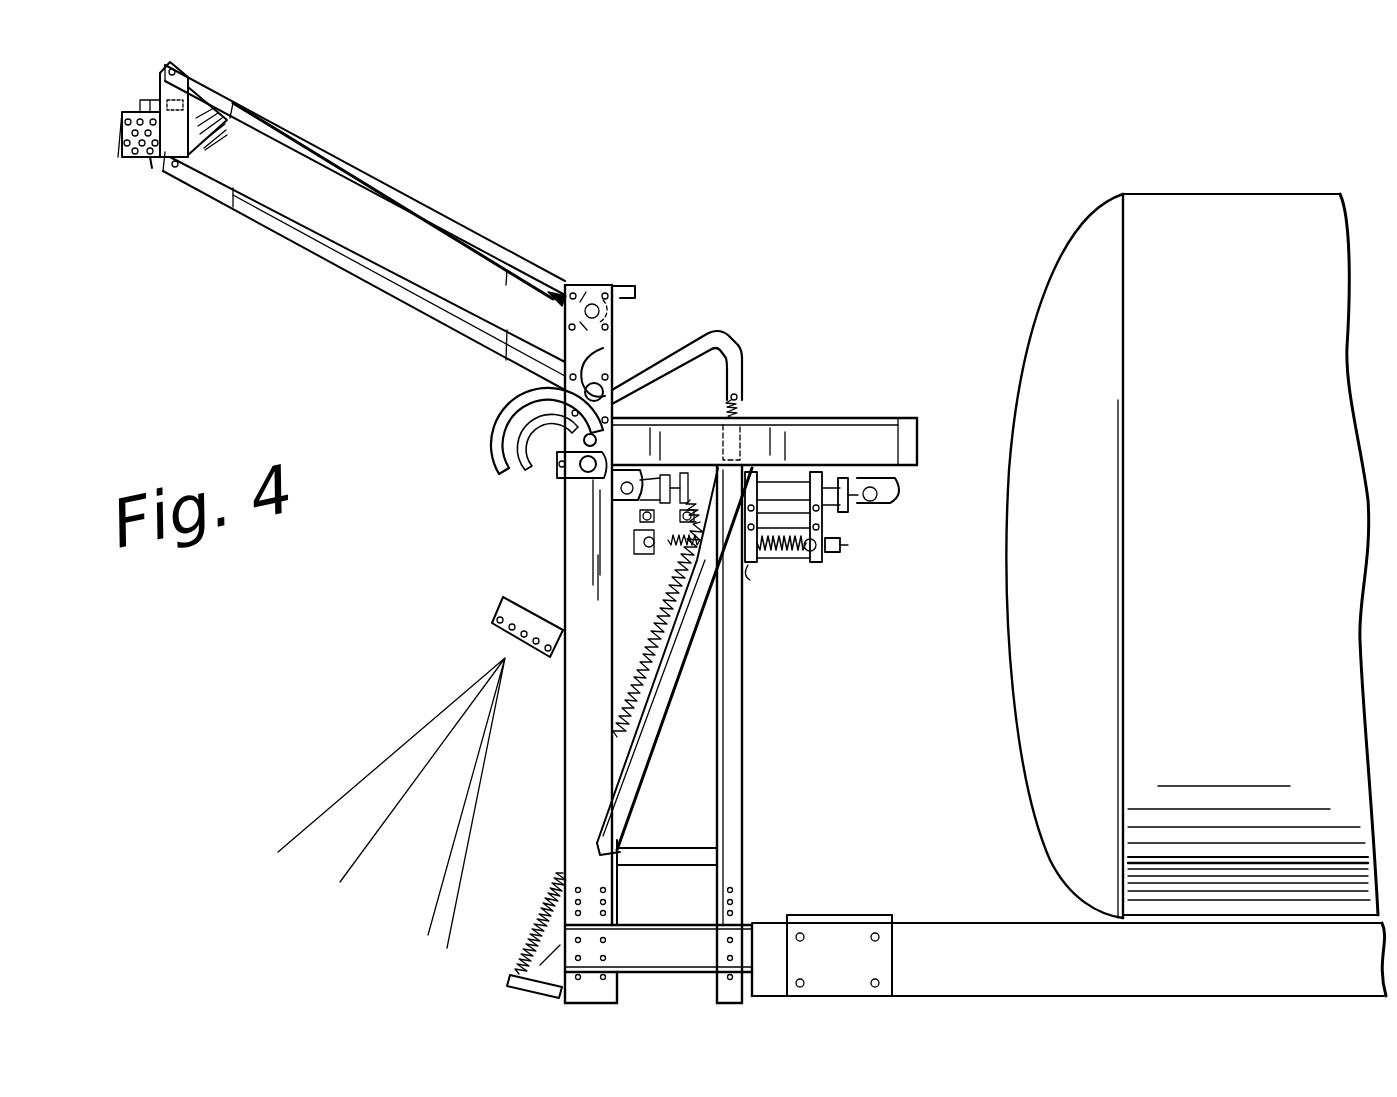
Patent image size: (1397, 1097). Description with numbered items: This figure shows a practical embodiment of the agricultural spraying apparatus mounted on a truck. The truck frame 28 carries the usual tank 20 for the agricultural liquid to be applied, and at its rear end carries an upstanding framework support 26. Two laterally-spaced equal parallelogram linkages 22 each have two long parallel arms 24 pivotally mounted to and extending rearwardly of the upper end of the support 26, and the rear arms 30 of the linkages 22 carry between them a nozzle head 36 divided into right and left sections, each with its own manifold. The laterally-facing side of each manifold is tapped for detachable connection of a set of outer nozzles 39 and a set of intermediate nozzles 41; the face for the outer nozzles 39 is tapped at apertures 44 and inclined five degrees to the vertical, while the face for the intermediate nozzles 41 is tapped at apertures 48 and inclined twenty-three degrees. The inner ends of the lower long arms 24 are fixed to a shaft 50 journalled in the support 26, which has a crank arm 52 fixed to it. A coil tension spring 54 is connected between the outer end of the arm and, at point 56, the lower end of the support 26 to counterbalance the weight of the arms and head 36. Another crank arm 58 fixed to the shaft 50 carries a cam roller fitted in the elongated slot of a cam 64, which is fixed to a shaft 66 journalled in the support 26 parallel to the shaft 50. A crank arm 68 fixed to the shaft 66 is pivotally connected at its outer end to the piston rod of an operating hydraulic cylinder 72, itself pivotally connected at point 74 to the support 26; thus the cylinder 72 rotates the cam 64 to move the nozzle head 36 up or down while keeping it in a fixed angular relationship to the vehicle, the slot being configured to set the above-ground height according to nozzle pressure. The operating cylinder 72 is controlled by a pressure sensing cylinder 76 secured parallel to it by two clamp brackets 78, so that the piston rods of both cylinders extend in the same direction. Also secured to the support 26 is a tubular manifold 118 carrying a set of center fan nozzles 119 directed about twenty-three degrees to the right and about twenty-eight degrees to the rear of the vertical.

The tank 20 is at (1185, 194).
The parallelogram linkage 22 is at (364, 227).
The long parallel arm 24 is at (440, 205).
The upstanding framework support 26 is at (788, 412).
The truck frame 28 is at (975, 920).
The rear arm 30 is at (200, 93).
The nozzle head 36 is at (124, 138).
The outer nozzle 39 is at (140, 120).
The intermediate nozzle 41 is at (120, 150).
The tapped aperture 44 is at (174, 109).
The tapped aperture 48 is at (152, 168).
The shaft 50 is at (600, 372).
The crank arm 52 is at (708, 323).
The coil tension spring 54 is at (550, 906).
The spring connection point 56 is at (508, 985).
The crank arm 58 is at (615, 410).
The cam 64 is at (492, 433).
The shaft 66 is at (580, 476).
The crank arm 68 is at (612, 500).
The operating hydraulic cylinder 72 is at (794, 485).
The pivot connection 74 is at (882, 506).
The pressure sensing cylinder 76 is at (794, 580).
The clamp bracket 78 is at (820, 560).
The tubular manifold 118 is at (492, 612).
The center fan nozzle 119 is at (500, 640).